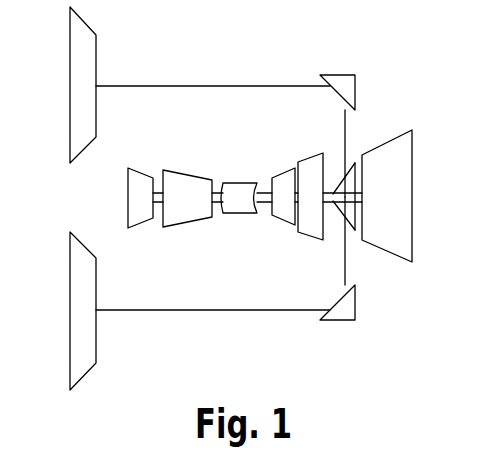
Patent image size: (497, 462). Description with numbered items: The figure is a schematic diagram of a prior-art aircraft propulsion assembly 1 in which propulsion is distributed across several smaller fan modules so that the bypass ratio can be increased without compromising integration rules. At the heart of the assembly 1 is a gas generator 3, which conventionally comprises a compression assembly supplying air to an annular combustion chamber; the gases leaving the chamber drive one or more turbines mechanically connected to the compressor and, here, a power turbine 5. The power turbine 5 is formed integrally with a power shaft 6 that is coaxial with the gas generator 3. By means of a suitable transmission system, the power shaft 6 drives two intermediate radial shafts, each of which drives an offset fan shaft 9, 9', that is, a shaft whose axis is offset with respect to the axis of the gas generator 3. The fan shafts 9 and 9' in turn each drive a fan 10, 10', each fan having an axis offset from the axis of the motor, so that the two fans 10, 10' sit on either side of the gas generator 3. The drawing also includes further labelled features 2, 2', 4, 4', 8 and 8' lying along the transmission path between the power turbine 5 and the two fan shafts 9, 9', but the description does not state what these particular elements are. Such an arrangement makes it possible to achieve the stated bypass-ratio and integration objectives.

The assembly 1 is at (56, 198).
The first free turbine 2 is at (389, 178).
The second free turbine 2' is at (391, 218).
The gas generator 3 is at (217, 221).
The first gearbox 4 is at (337, 61).
The second gearbox 4' is at (337, 335).
The power turbine 5 is at (403, 150).
The power shaft 6 is at (333, 199).
The first power shaft 8 is at (372, 150).
The second power shaft 8' is at (373, 242).
The fan shaft 9 is at (213, 51).
The fan shaft 9' is at (213, 343).
The fan 10 is at (114, 85).
The fan 10' is at (116, 311).